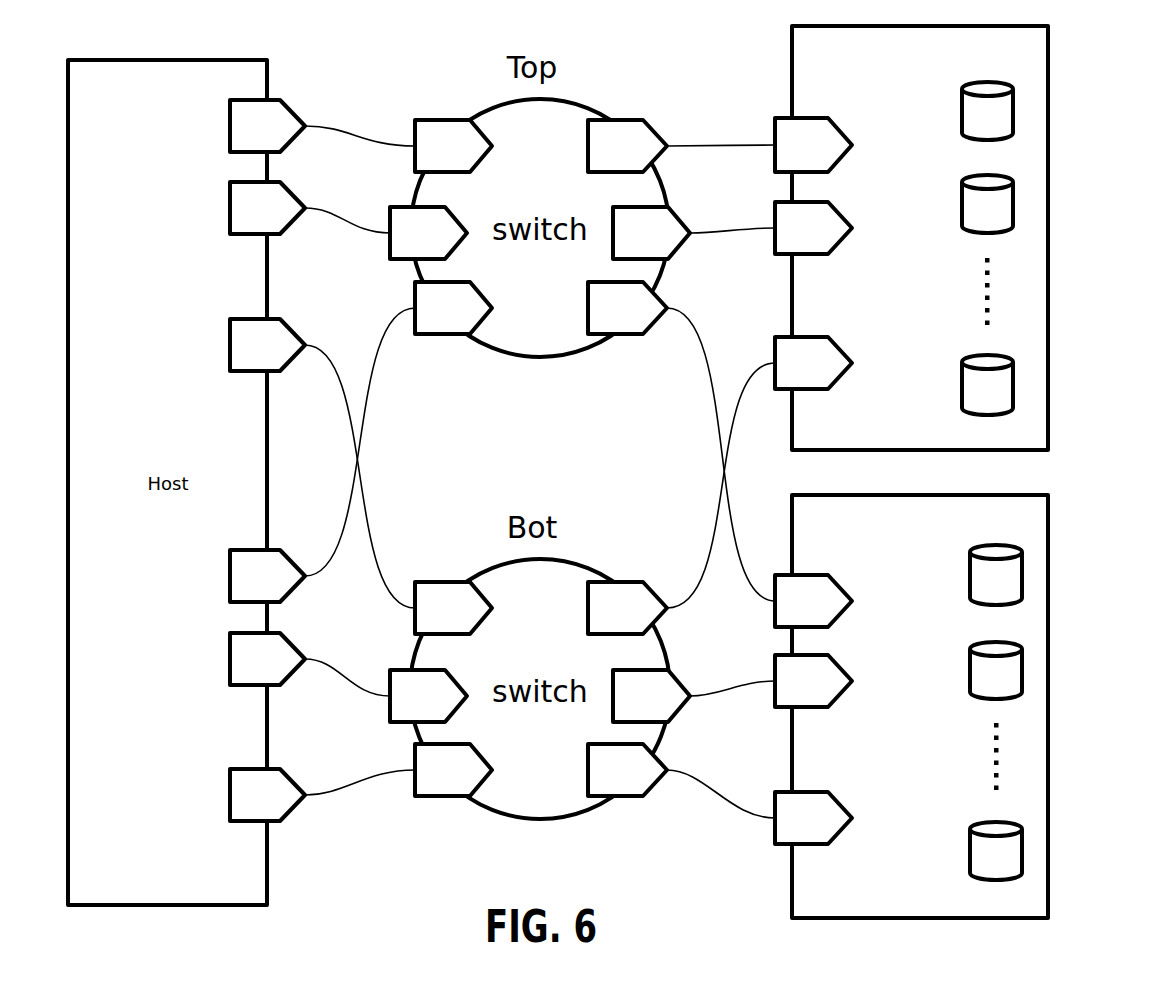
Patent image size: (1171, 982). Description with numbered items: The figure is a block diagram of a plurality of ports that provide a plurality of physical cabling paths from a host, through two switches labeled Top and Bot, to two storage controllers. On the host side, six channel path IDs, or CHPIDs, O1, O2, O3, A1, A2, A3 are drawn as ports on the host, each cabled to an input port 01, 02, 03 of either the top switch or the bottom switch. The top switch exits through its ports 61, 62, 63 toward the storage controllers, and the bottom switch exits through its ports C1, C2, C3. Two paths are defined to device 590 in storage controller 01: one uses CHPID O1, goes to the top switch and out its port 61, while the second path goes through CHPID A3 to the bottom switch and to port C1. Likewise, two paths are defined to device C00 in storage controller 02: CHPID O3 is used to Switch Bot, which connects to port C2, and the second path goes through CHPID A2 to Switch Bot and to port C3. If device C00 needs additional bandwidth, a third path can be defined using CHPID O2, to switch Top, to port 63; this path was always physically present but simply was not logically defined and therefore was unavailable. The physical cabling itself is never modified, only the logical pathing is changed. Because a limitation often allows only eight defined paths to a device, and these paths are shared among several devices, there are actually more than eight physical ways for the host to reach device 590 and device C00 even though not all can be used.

The device 590 is at (1014, 108).
The device C00 is at (1023, 574).
The channel path ID (CHPID) O1 is at (267, 126).
The channel path ID (CHPID) O2 is at (267, 208).
The channel path ID (CHPID) O3 is at (267, 345).
The channel path ID (CHPID) A1 is at (267, 576).
The channel path ID (CHPID) A2 is at (267, 659).
The channel path ID (CHPID) A3 is at (267, 795).
The storage controller 01 is at (453, 377).
The storage controller 02 is at (428, 464).
The channel path ID (CHPID) 03 is at (453, 539).
The port 61 is at (627, 146).
The port 62 is at (651, 233).
The port 63 is at (627, 308).
The port C1 is at (627, 608).
The port C2 is at (651, 696).
The port C3 is at (627, 770).